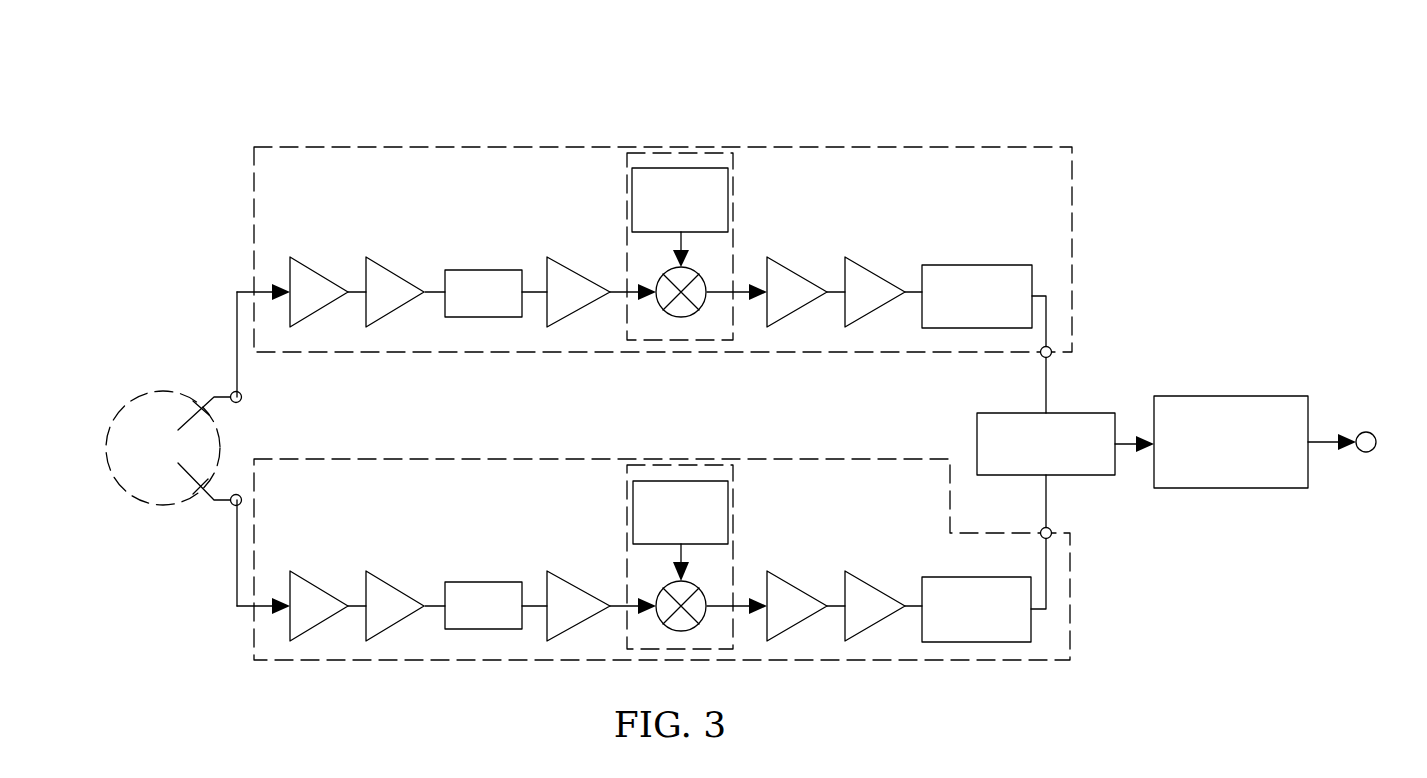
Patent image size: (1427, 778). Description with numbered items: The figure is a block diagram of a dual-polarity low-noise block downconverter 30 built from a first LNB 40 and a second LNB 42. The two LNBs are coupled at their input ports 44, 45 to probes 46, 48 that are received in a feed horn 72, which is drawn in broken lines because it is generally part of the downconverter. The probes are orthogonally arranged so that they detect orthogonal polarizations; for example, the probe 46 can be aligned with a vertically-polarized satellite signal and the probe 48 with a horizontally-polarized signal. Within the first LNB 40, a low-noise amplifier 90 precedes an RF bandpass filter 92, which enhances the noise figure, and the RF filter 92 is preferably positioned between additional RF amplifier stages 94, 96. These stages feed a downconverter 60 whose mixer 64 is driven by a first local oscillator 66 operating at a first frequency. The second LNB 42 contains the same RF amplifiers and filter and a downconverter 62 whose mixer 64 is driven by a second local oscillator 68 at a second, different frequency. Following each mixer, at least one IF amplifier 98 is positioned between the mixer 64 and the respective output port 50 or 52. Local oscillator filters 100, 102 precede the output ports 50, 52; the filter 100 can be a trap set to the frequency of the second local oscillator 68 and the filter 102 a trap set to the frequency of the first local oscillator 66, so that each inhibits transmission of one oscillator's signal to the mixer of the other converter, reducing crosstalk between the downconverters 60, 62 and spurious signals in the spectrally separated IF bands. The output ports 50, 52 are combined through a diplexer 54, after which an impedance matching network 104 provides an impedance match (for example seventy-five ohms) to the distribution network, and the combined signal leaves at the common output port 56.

The dual-polarity low-noise block downconverter 30 is at (1170, 194).
The first LNB 40 is at (876, 133).
The second LNB 42 is at (876, 445).
The input port 44 is at (242, 397).
The input port 45 is at (229, 492).
The probe 46 is at (197, 392).
The probe 48 is at (205, 490).
The output port 50 is at (1052, 347).
The output port 52 is at (1052, 528).
The diplexer 54 is at (1080, 413).
The output port 56 is at (1372, 452).
The downconverter 60 is at (612, 180).
The downconverter 62 is at (612, 491).
The mixer 64 is at (700, 283).
The first local oscillator 66 is at (733, 190).
The second local oscillator 68 is at (733, 500).
The feed horn 72 is at (137, 378).
The low-noise amplifier 90 is at (312, 270).
The RF bandpass filter 92 is at (487, 270).
The RF amplifier stage 94 is at (391, 270).
The RF amplifier stage 96 is at (572, 270).
The IF amplifier 98 is at (791, 270).
The local oscillator filter 100 is at (975, 265).
The local oscillator filter 102 is at (987, 577).
The impedance matching network 104 is at (1255, 396).